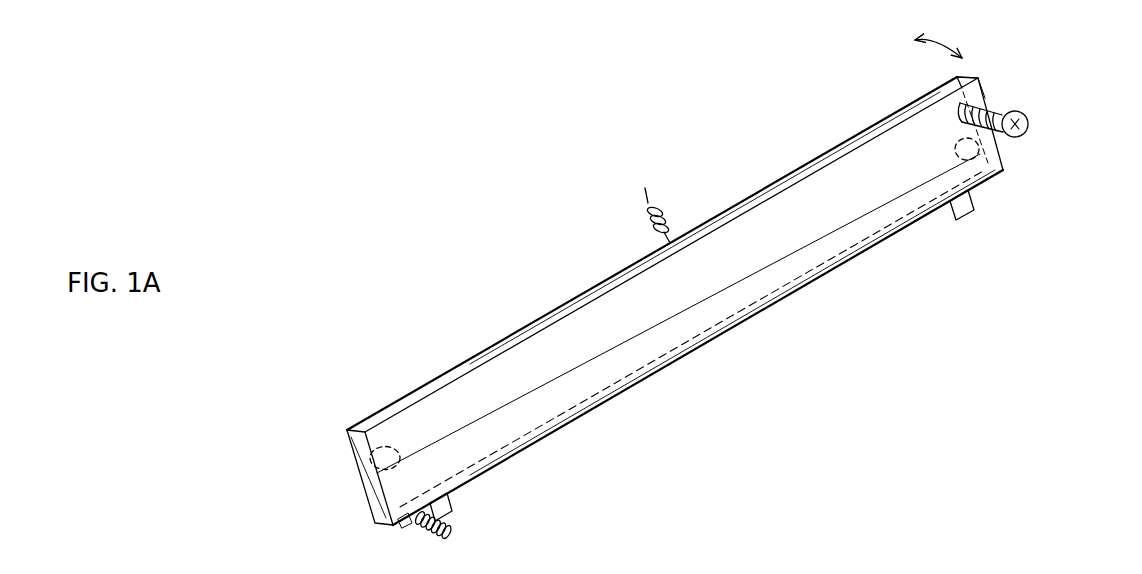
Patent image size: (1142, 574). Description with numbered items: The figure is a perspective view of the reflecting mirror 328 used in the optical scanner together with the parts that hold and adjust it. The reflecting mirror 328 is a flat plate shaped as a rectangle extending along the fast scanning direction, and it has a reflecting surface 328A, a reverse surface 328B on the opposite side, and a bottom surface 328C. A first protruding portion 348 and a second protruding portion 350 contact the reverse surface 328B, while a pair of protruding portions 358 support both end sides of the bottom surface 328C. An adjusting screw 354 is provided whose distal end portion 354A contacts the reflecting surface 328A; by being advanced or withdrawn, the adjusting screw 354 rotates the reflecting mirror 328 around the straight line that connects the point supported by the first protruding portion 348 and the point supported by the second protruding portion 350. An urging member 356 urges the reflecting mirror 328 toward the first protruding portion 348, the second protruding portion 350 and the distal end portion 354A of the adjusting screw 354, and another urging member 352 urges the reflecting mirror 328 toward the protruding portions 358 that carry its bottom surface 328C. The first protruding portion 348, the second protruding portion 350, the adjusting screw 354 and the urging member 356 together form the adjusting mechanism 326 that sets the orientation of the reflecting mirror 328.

The adjusting mechanism 326 is at (1042, 337).
The reflecting mirror 328 is at (597, 266).
The reflecting surface 328A is at (540, 358).
The reverse surface 328B is at (475, 389).
The bottom surface 328C is at (607, 393).
The first protruding portion 348 is at (398, 453).
The second protruding portion 350 is at (980, 150).
The urging member 352 is at (659, 207).
The adjusting screw 354 is at (1002, 101).
The distal end portion 354A is at (969, 81).
The urging member 356 is at (451, 531).
The protruding portions 358 is at (454, 503).